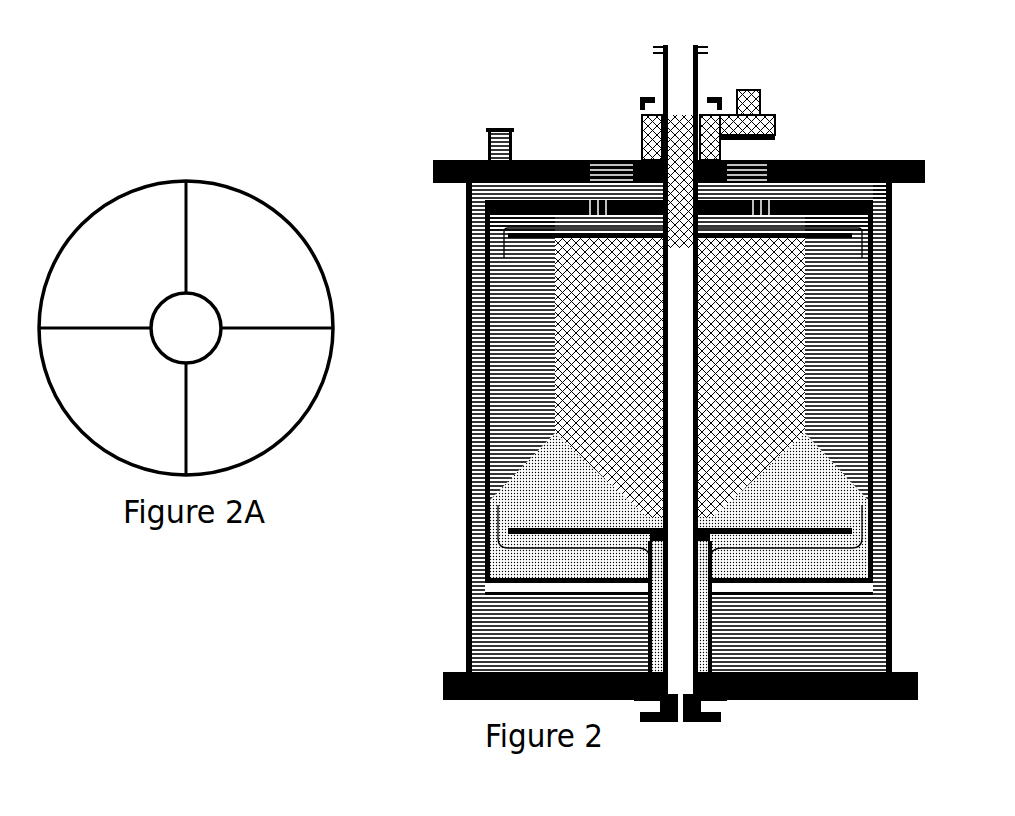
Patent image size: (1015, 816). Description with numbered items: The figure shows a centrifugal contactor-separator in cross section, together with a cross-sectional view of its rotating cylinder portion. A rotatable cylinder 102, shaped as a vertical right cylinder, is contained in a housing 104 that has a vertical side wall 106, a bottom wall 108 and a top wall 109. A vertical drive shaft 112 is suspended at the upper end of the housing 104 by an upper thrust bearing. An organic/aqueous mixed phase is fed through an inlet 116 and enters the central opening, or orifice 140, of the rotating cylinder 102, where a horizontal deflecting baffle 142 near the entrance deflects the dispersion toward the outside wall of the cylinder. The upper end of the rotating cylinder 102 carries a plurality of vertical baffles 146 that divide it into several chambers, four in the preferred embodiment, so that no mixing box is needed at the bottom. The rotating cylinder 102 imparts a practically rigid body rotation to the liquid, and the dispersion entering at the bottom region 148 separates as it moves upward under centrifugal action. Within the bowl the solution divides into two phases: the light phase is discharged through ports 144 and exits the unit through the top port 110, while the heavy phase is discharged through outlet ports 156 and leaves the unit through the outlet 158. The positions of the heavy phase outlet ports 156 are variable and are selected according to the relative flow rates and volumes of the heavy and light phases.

In FIG. 2, the rotatable cylinder 102 is at (477, 289).
In FIG. 2, the housing 104 is at (895, 262).
In FIG. 2, the vertical side wall 106 is at (893, 318).
In FIG. 2, the bottom wall 108 is at (792, 702).
In FIG. 2, the top wall 109 is at (865, 160).
In FIG. 2, the top port 110 is at (804, 128).
In FIG. 2, the vertical drive shaft 112 is at (700, 75).
In FIG. 2, the inlet 116 is at (669, 735).
In FIG. 2, the central opening (orifice) 140 is at (605, 553).
In FIG. 2, the horizontal deflecting baffle 142 is at (537, 517).
In FIG. 2, the ports 144 is at (648, 257).
In FIG. 2A, the vertical baffles 146 is at (291, 338).
In FIG. 2, the bottom region 148 is at (568, 573).
In FIG. 2, the outlet ports 156 is at (603, 215).
In FIG. 2, the outlet 158 is at (500, 130).